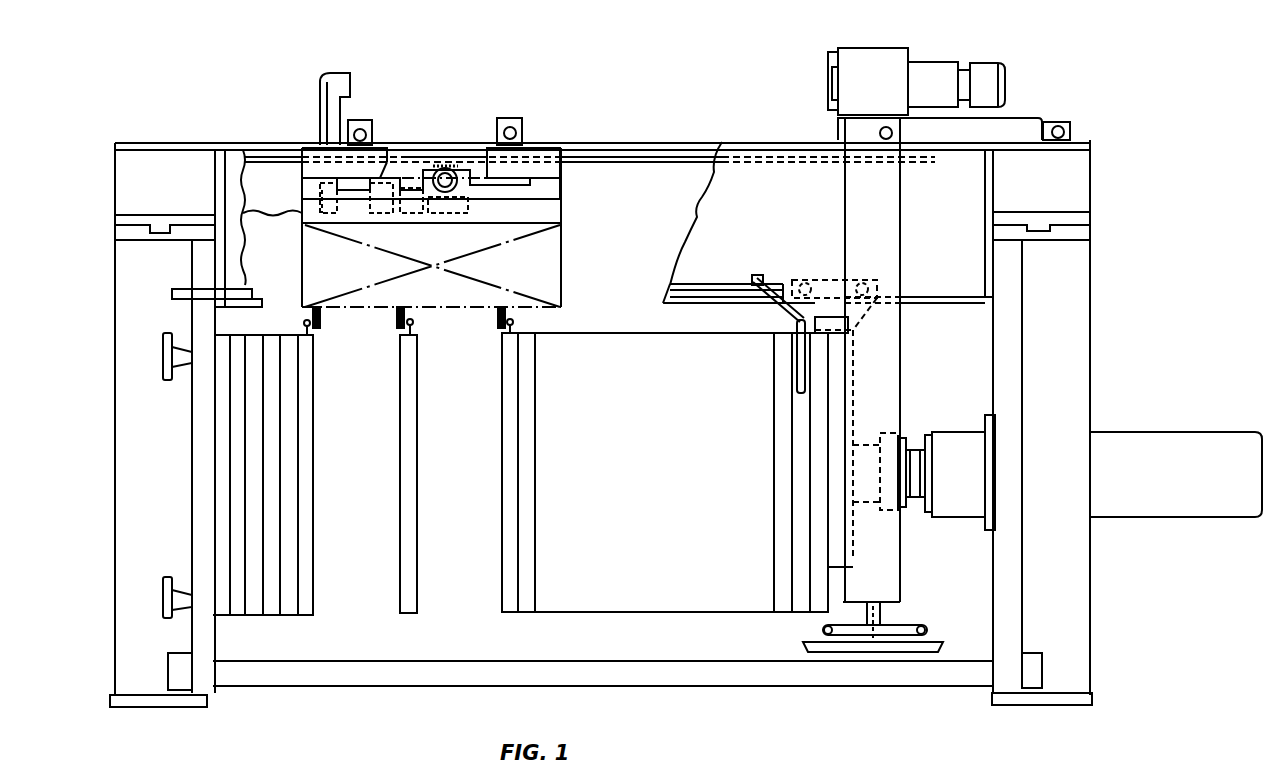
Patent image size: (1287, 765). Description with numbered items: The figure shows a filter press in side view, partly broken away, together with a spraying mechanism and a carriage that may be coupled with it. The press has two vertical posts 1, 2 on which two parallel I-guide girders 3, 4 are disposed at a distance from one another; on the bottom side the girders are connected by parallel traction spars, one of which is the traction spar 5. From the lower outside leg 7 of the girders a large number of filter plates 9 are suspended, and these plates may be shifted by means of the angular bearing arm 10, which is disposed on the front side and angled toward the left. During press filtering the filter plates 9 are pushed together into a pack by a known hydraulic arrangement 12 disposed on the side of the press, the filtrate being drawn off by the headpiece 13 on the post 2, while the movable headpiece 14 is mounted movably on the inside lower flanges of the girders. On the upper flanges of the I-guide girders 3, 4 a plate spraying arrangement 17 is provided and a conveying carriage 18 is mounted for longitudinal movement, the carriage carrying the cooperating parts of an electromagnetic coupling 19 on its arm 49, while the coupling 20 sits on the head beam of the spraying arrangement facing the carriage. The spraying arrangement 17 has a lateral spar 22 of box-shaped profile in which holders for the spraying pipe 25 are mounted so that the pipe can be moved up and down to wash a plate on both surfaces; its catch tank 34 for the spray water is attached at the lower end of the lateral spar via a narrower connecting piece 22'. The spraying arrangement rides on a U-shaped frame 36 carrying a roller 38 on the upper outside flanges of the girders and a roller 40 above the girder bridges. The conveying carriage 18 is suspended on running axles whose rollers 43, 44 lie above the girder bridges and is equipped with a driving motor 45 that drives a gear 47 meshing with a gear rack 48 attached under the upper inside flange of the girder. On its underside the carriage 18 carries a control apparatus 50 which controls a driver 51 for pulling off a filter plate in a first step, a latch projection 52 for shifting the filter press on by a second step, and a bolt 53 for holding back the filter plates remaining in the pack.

The vertical post 1 is at (1082, 380).
The vertical post 2 is at (122, 448).
The I-guide girder 3 is at (765, 183).
The I-guide girder 4 is at (608, 177).
The traction spar 5 is at (647, 680).
The lower outside leg 7 is at (705, 303).
The filter plate 9 is at (305, 608).
The angular bearing arm 10 is at (792, 308).
The hydraulic arrangement 12 is at (970, 508).
The headpiece 13 is at (200, 507).
The movable headpiece 14 is at (838, 560).
The plate spraying arrangement 17 is at (941, 54).
The conveying carriage 18 is at (456, 128).
The electromagnetic coupling 19 is at (350, 88).
The electromagnetic coupling 20 is at (826, 84).
The lateral spar 22 is at (892, 360).
The connecting piece 22' is at (899, 662).
The spraying pipe 25 is at (872, 628).
The catch tank 34 is at (828, 648).
The U-shaped frame 36 is at (1018, 130).
The roller 38 is at (887, 127).
The roller 40 is at (1064, 135).
The roller 43 is at (365, 133).
The roller 44 is at (515, 132).
The driving motor 45 is at (328, 185).
The gear 47 is at (453, 170).
The gear rack 48 is at (413, 157).
The arm 49 is at (320, 108).
The control apparatus 50 is at (548, 278).
The driver 51 is at (395, 315).
The latch projection 52 is at (500, 315).
The bolt 53 is at (320, 323).